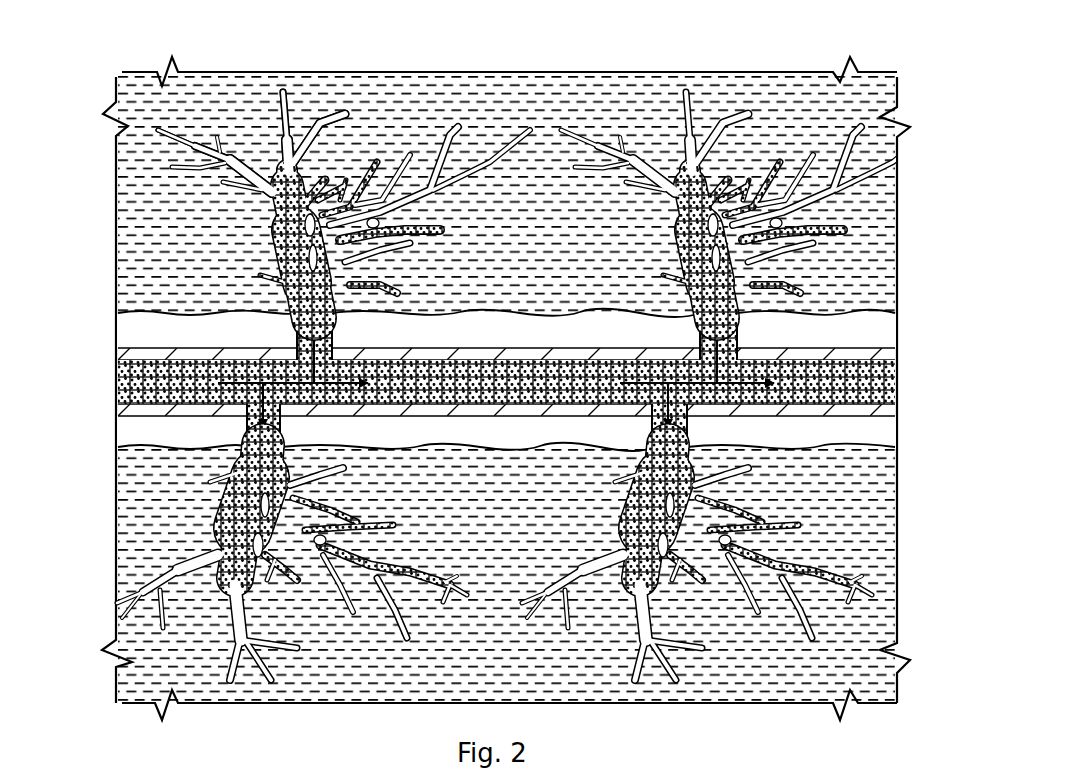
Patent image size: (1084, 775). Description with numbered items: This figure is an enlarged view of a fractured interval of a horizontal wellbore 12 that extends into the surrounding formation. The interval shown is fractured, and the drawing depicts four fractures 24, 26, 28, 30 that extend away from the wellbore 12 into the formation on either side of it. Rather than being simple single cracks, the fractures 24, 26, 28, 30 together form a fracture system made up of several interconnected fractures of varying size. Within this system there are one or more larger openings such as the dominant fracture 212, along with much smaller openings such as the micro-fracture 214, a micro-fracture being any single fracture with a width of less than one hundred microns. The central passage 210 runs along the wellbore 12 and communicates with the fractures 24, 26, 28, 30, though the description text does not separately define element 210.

The wellbore 12 is at (872, 355).
The wellbore 210 is at (125, 383).
The dominant fracture 212 is at (282, 140).
The micro-fracture 214 is at (160, 130).
The fracture 24 is at (322, 92).
The fracture 26 is at (272, 673).
The fracture 28 is at (725, 92).
The fracture 30 is at (720, 592).